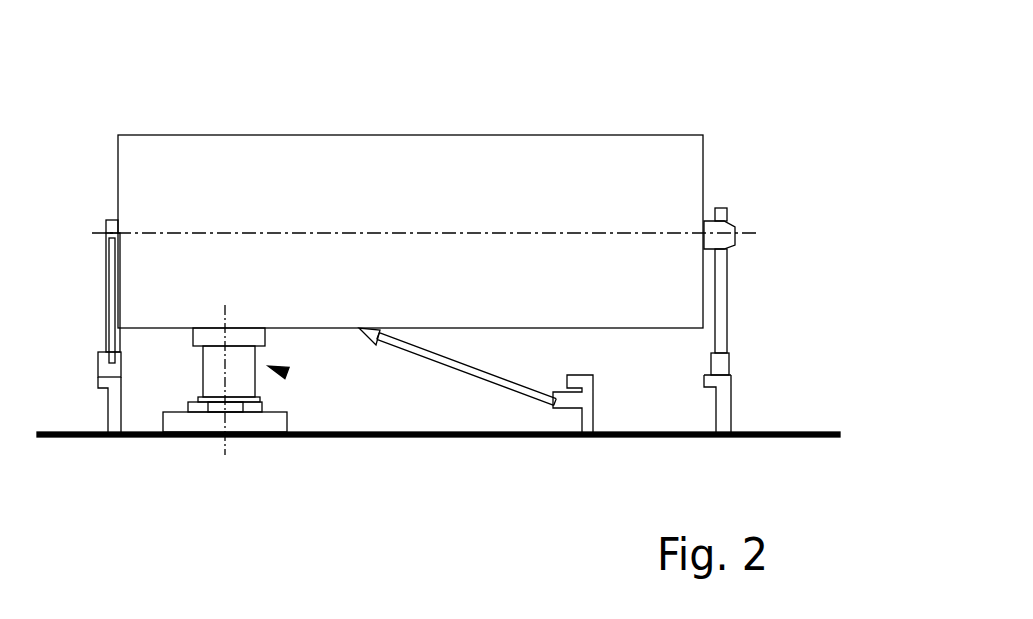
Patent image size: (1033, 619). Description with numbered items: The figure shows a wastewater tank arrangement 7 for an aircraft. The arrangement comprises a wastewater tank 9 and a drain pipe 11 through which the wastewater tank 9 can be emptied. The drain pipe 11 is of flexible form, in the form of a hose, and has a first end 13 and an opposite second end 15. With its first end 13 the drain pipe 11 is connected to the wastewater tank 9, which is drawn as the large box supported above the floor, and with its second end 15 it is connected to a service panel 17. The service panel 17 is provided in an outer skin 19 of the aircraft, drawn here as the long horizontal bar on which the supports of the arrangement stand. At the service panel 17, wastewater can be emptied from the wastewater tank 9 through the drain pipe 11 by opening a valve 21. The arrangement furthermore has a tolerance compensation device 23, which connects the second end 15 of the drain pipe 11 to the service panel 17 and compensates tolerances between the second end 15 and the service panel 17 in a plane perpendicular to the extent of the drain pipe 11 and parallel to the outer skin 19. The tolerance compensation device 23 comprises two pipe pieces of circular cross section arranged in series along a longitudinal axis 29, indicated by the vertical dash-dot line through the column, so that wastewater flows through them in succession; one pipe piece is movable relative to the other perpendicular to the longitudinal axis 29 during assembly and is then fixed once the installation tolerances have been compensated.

The wastewater tank arrangement 7 is at (668, 95).
The wastewater tank 9 is at (398, 188).
The drain pipe 11 is at (213, 365).
The first end 13 is at (213, 338).
The second end 15 is at (208, 404).
The service panel 17 is at (181, 418).
The outer skin 19 is at (407, 437).
The valve 21 is at (290, 373).
The tolerance compensation device 23 is at (243, 404).
The longitudinal axis 29 is at (226, 462).